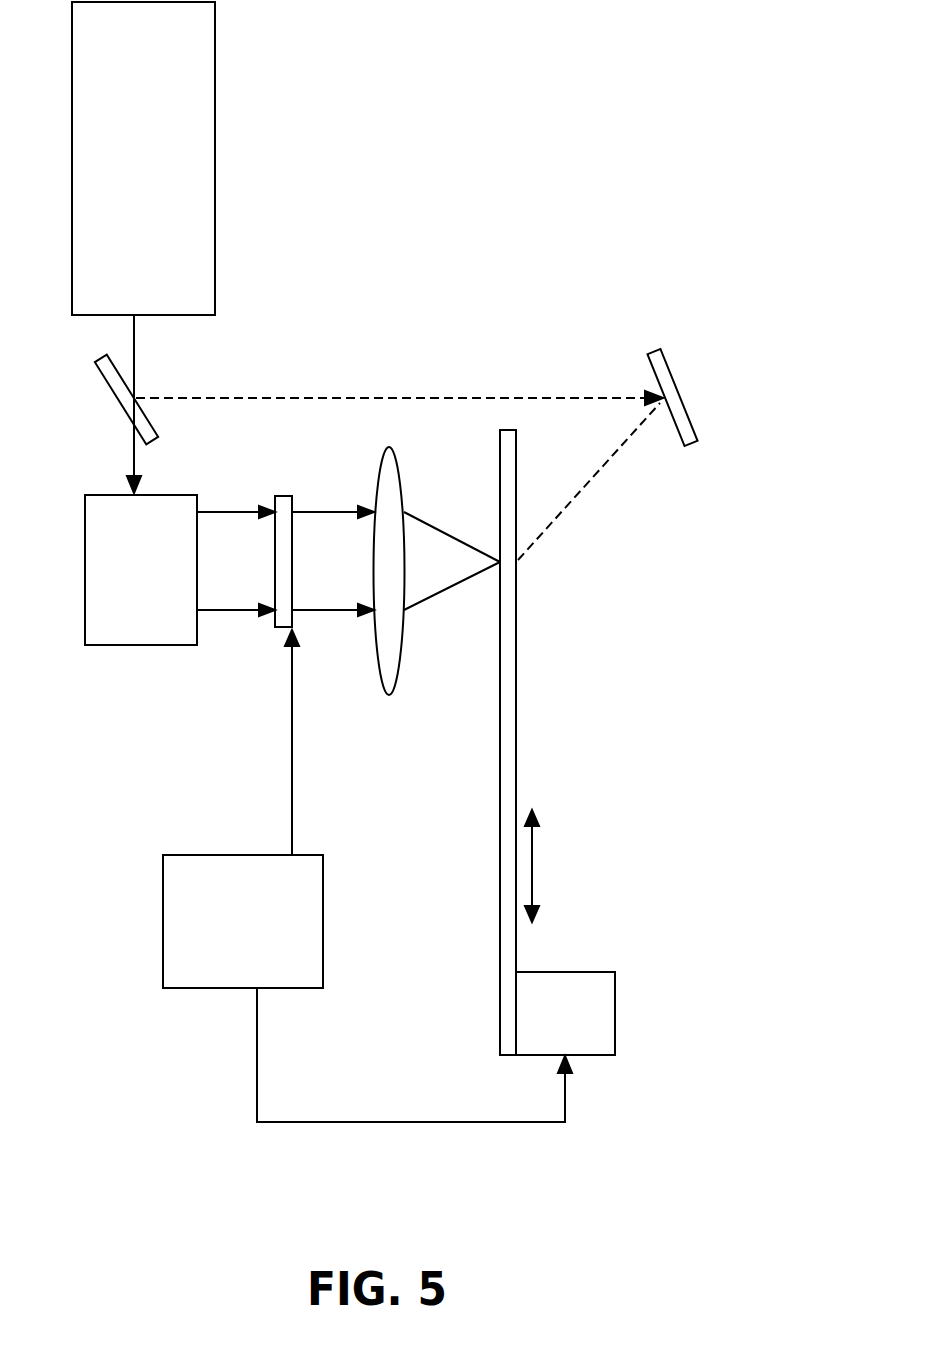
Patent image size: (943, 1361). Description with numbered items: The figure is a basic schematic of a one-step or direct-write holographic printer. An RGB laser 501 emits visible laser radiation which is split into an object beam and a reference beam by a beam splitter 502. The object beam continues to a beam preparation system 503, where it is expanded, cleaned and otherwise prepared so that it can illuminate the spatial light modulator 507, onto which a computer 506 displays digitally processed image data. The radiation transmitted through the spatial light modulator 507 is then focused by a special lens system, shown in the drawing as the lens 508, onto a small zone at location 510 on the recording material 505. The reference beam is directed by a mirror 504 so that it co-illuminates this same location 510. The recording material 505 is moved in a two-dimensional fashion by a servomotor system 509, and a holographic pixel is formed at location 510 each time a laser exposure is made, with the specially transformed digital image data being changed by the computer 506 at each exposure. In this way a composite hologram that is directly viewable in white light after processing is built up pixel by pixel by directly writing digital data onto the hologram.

The RGB laser 501 is at (143, 247).
The beam splitter 502 is at (351, 400).
The beam preparation system 503 is at (180, 570).
The mirror 504 is at (687, 394).
The recording material 505 is at (532, 740).
The computer 506 is at (367, 876).
The spatial light modulator (SLM) 507 is at (318, 533).
The lens 508 is at (421, 590).
The servomotor system 509 is at (565, 1013).
The small zone (location on recording material) 510 is at (589, 494).